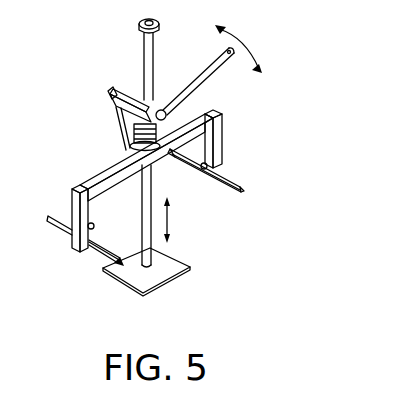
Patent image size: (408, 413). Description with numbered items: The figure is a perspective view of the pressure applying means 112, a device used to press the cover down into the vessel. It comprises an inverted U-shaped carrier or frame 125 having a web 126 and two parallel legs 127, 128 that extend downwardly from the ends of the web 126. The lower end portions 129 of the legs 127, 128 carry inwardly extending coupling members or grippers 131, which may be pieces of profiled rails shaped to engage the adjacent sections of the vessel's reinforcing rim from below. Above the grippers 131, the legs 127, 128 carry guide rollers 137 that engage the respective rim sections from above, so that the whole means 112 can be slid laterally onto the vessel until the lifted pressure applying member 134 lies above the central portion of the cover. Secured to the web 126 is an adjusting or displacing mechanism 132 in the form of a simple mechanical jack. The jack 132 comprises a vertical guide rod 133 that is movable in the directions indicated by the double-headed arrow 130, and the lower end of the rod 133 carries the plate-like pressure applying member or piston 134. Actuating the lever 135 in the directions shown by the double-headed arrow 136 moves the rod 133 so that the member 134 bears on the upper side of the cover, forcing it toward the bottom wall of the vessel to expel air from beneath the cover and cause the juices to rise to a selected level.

The pressure applying means 112 is at (58, 63).
The carrier or frame 125 is at (232, 122).
The web 126 is at (103, 177).
The leg 127 is at (72, 207).
The leg 128 is at (222, 138).
The lower end portions 129 is at (221, 172).
The double-headed arrow 130 is at (170, 218).
The coupling members or grippers 131 is at (238, 192).
The adjusting or displacing mechanism 132 is at (137, 97).
The vertical guide rod 133 is at (150, 56).
The pressure applying member or piston 134 is at (163, 270).
The lever 135 is at (221, 64).
The double-headed arrow 136 is at (242, 44).
The guide rollers 137 is at (204, 170).